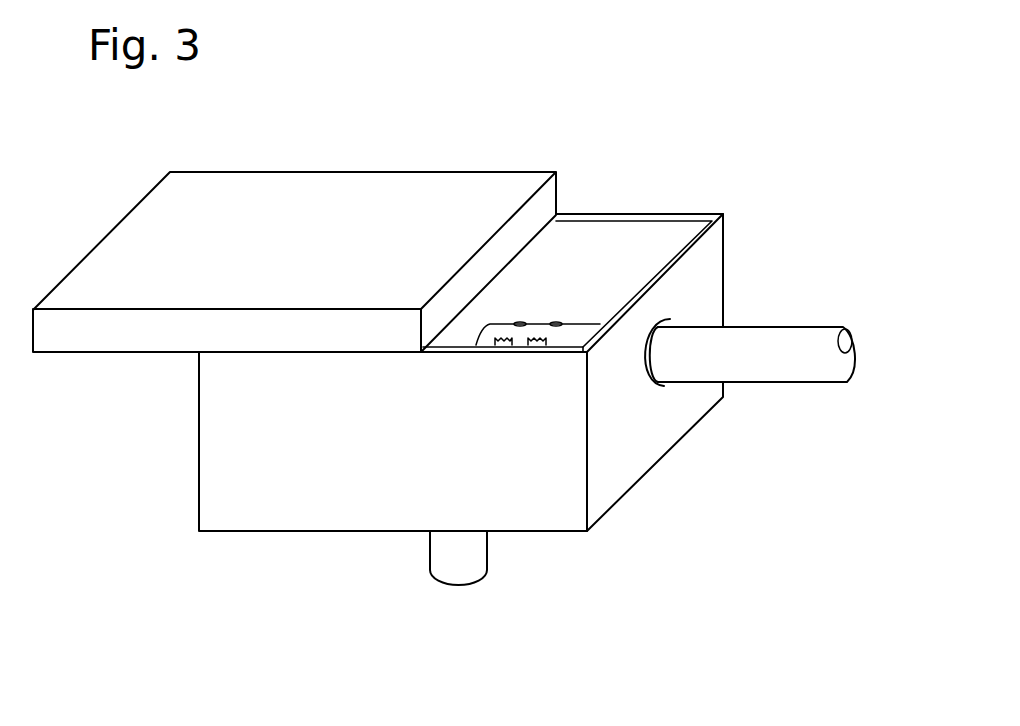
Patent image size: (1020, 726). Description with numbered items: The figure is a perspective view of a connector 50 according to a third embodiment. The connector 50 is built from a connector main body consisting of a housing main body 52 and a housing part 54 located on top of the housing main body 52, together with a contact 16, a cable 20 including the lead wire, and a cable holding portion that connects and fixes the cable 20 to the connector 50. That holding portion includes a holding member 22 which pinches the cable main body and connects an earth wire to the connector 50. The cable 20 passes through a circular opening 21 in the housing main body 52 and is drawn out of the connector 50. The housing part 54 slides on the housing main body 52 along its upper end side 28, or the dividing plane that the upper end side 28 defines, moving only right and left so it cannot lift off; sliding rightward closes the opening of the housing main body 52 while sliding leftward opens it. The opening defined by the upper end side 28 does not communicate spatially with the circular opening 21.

The connector 50 is at (486, 137).
The housing main body 52 is at (281, 500).
The housing part 54 is at (215, 188).
The upper end side 28 is at (638, 215).
The holding member 22 is at (548, 325).
The cable 20 is at (793, 338).
The circular opening 21 is at (645, 382).
The contact 16 is at (458, 567).